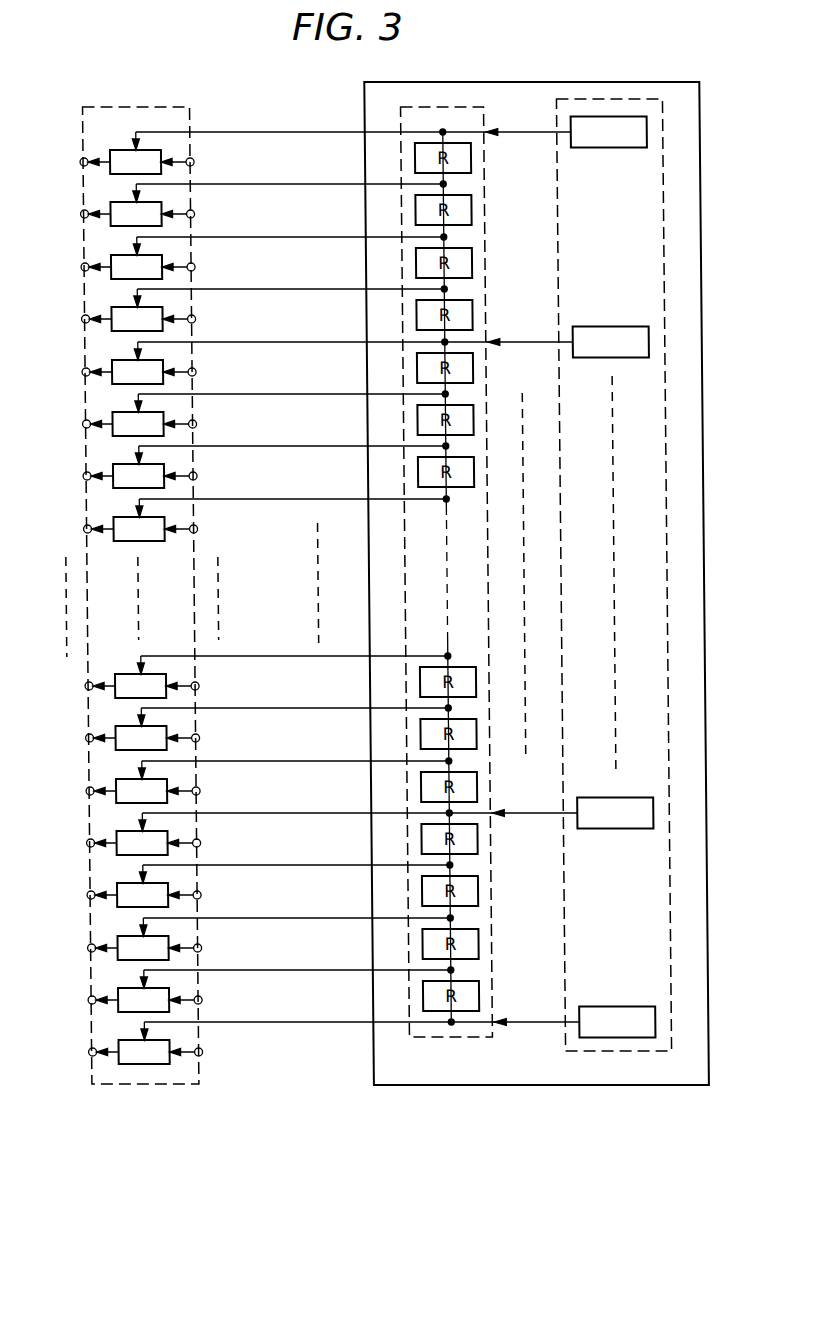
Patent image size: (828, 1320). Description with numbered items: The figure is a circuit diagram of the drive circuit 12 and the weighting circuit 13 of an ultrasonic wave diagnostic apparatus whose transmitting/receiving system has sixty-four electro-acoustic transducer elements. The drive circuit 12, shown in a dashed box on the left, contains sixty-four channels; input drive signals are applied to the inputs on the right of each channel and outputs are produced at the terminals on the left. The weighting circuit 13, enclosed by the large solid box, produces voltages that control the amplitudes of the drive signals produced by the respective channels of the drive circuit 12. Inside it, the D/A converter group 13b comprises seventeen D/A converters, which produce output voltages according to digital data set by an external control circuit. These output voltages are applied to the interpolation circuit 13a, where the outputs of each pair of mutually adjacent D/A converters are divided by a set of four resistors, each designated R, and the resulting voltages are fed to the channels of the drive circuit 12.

The drive circuit 12 is at (151, 1078).
The weighting circuit 13 is at (372, 1057).
The interpolation circuit 13a is at (450, 1037).
The D/A converter group 13b is at (627, 1049).